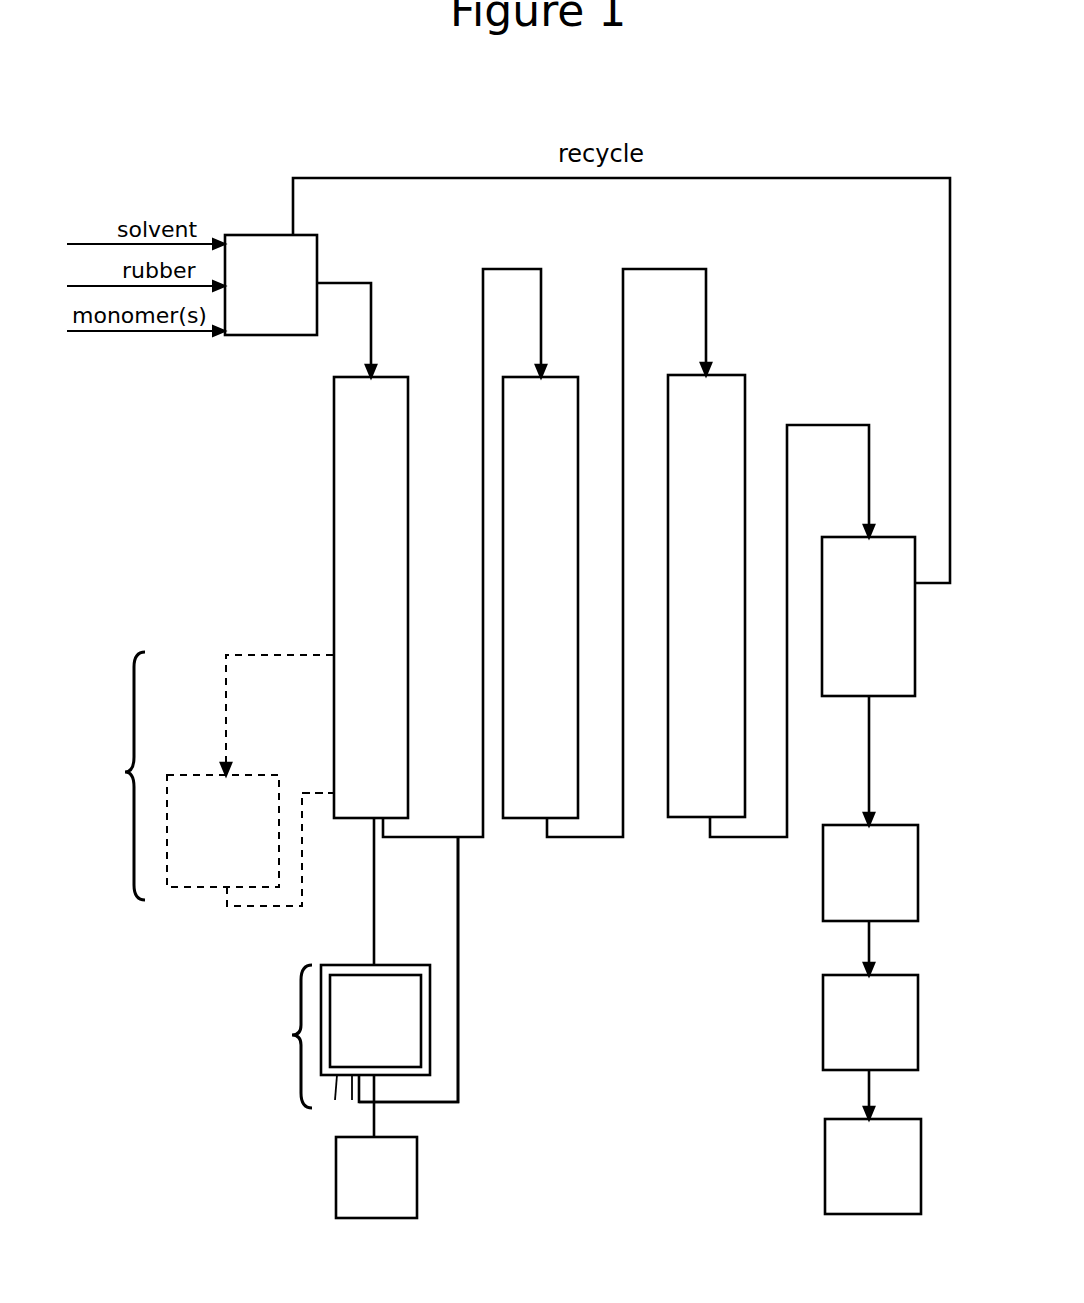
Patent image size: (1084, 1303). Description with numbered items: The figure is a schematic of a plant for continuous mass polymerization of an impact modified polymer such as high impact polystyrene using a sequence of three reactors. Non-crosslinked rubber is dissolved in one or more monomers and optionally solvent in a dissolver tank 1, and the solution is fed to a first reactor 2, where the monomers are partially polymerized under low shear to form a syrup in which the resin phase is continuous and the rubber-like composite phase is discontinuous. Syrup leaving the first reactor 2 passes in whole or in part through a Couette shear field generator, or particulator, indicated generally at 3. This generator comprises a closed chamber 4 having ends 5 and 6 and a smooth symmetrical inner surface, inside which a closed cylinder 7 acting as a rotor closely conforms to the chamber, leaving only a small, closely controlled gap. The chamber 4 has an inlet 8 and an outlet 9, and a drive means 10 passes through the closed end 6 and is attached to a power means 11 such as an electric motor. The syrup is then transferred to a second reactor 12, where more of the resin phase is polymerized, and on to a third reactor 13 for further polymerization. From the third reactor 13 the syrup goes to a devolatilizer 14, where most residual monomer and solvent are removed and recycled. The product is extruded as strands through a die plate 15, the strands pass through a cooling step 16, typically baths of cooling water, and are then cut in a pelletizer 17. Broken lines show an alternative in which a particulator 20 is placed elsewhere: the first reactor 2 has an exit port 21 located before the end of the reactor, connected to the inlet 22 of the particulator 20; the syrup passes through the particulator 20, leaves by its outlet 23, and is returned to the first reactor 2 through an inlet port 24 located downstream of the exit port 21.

The dissolver tank 1 is at (271, 285).
The first reactor 2 is at (371, 597).
The Couette shear field generator 3 is at (275, 1036).
The closed chamber 4 is at (330, 1101).
The end of chamber 5 is at (347, 962).
The end of chamber 6 is at (351, 1101).
The cylinder 7 is at (375, 1021).
The inlet 8 is at (381, 962).
The outlet 9 is at (432, 983).
The drive means 10 is at (440, 1002).
The power means 11 is at (376, 1177).
The second reactor 12 is at (540, 597).
The third reactor 13 is at (706, 596).
The devolatilizer 14 is at (868, 616).
The die plate 15 is at (870, 873).
The cooling step 16 is at (870, 1022).
The pelletizer 17 is at (873, 1166).
The particulator 20 is at (99, 776).
The exit port 21 is at (277, 696).
The inlet of particulator 22 is at (223, 831).
The outlet of particulator 23 is at (227, 893).
The inlet port 24 is at (333, 790).